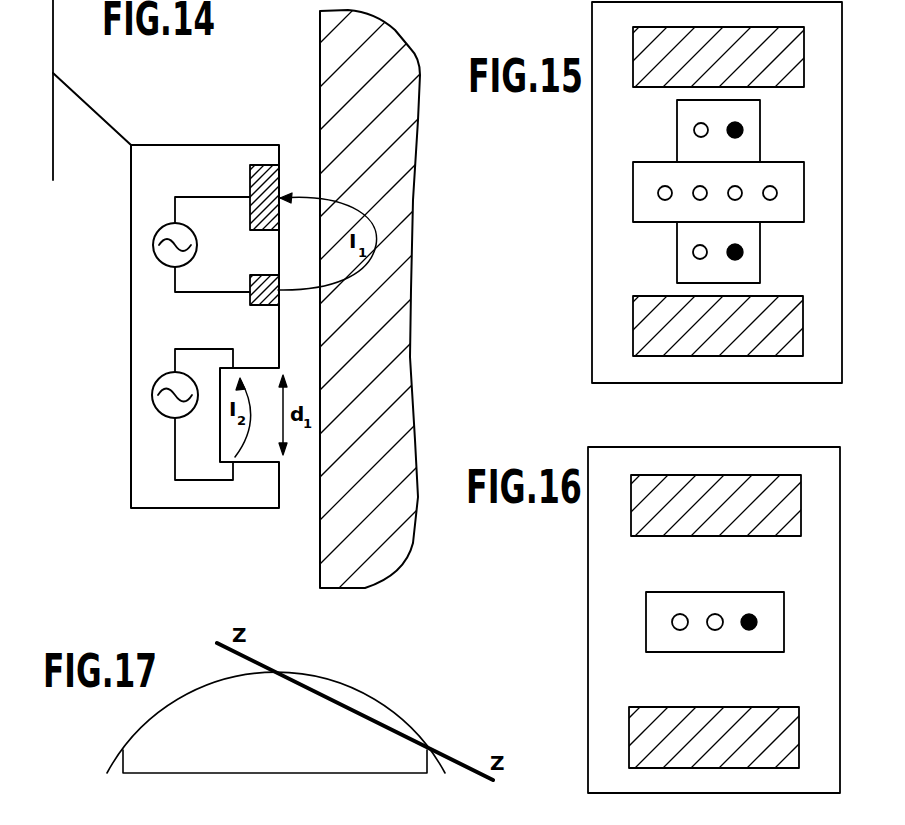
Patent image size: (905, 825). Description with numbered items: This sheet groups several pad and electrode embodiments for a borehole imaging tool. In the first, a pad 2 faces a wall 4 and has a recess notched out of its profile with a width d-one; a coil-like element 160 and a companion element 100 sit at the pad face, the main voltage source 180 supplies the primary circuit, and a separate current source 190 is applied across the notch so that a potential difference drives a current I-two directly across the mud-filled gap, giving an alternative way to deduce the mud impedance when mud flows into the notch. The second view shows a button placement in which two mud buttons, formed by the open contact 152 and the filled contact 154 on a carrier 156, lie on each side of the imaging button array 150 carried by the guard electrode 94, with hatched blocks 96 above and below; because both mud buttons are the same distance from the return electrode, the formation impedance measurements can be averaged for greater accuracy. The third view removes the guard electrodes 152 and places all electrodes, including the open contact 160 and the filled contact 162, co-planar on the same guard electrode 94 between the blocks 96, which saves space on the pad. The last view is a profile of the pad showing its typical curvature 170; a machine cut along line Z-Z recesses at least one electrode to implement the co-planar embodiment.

In FIG. 14, the sensor device housing 2 is at (196, 100).
In FIG. 14, the wall 4 is at (332, 48).
In FIG. 14, the coil 160 is at (268, 190).
In FIG. 16, the coil 160 is at (716, 618).
In FIG. 14, the coil 100 is at (257, 305).
In FIG. 14, the main voltage source 180 is at (194, 256).
In FIG. 14, the separate current source 190 is at (165, 383).
In FIG. 15, the magnet 96 is at (658, 70).
In FIG. 16, the magnet 96 is at (657, 518).
In FIG. 15, the carrier plate 156 is at (720, 117).
In FIG. 15, the guard electrodes 152 is at (693, 129).
In FIG. 15, the contact 154 is at (744, 131).
In FIG. 15, the guard electrode 94 is at (655, 212).
In FIG. 16, the guard electrode 94 is at (670, 642).
In FIG. 15, the imaging button array 150 is at (773, 196).
In FIG. 16, the contact 162 is at (754, 629).
In FIG. 17, the curvature 170 is at (350, 687).